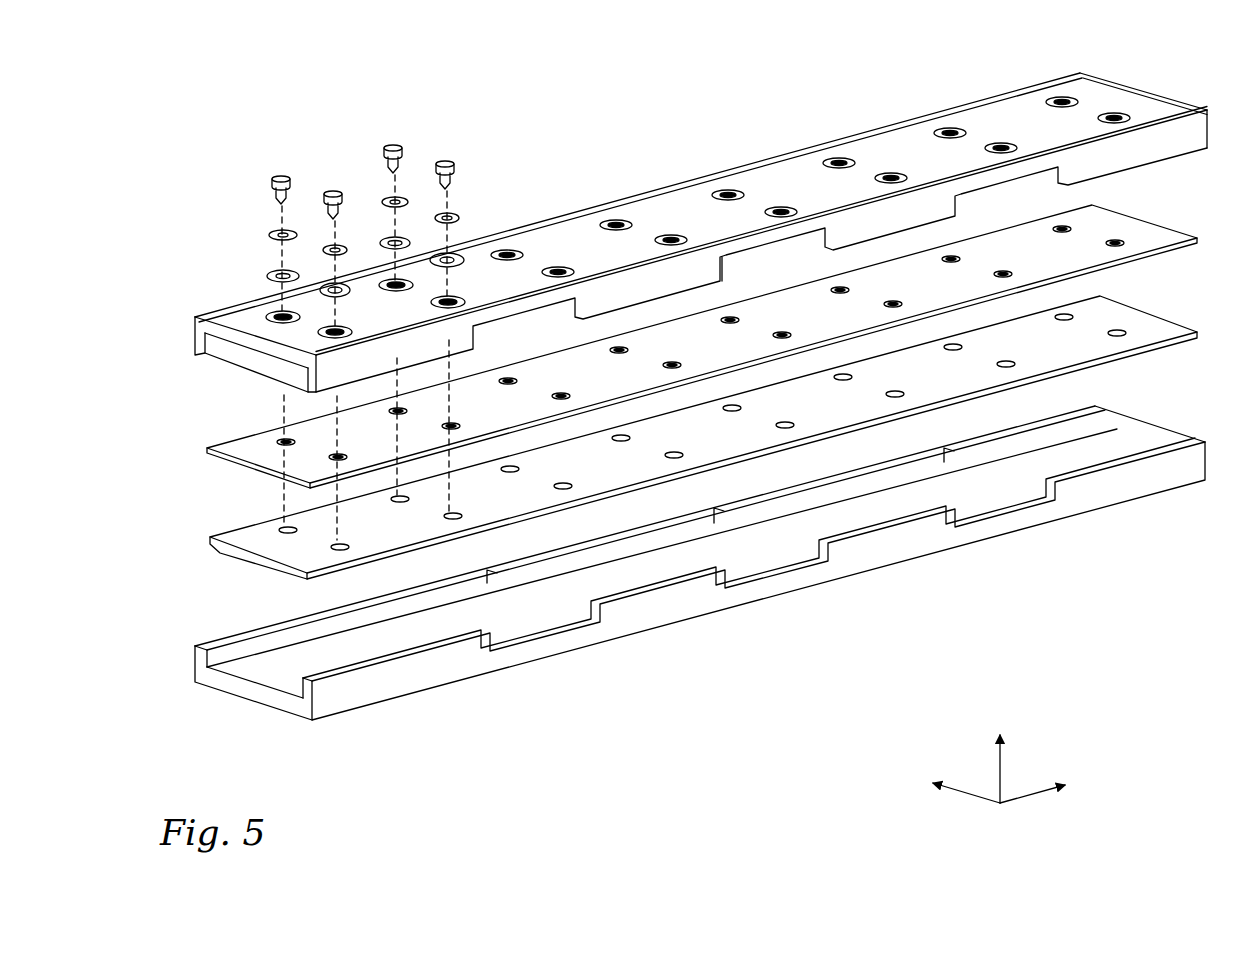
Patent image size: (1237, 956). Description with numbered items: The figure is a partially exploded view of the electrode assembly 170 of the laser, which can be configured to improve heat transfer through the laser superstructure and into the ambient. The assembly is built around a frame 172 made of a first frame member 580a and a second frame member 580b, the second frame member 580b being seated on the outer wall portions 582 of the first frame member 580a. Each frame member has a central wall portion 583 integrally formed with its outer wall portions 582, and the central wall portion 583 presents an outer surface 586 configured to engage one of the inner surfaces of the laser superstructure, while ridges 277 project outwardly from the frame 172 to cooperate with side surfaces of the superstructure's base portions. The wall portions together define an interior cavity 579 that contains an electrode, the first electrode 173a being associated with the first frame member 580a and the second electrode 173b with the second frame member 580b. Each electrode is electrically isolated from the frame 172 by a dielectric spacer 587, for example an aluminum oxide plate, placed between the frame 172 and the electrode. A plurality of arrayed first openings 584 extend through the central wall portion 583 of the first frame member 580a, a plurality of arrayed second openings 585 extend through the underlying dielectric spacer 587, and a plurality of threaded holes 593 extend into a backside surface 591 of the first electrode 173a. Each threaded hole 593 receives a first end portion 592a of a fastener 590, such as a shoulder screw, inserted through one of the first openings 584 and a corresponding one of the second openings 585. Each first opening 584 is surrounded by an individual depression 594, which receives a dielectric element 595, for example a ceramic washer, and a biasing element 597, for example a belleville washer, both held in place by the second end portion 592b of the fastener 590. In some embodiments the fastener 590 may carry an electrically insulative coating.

The electrode assembly 170 is at (710, 690).
The frame 172 is at (1080, 72).
The first electrode 173a is at (828, 412).
The second electrode 173b is at (658, 557).
The ridges 277 is at (827, 135).
The interior cavity 579 is at (758, 270).
The first frame member 580a is at (1067, 120).
The second frame member 580b is at (997, 530).
The outer wall portions 582 is at (197, 337).
The central wall portion 583 is at (262, 348).
The first openings 584 is at (282, 313).
The second openings 585 is at (512, 378).
The outer surface 586 is at (810, 187).
The dielectric spacer 587 is at (1090, 237).
The fastener 590 is at (395, 146).
The backside surface 591 is at (703, 437).
The first end portion 592a is at (277, 196).
The second end portion 592b is at (281, 175).
The threaded holes 593 is at (565, 484).
The depression 594 is at (614, 218).
The dielectric element 595 is at (388, 200).
The biasing element 597 is at (381, 242).